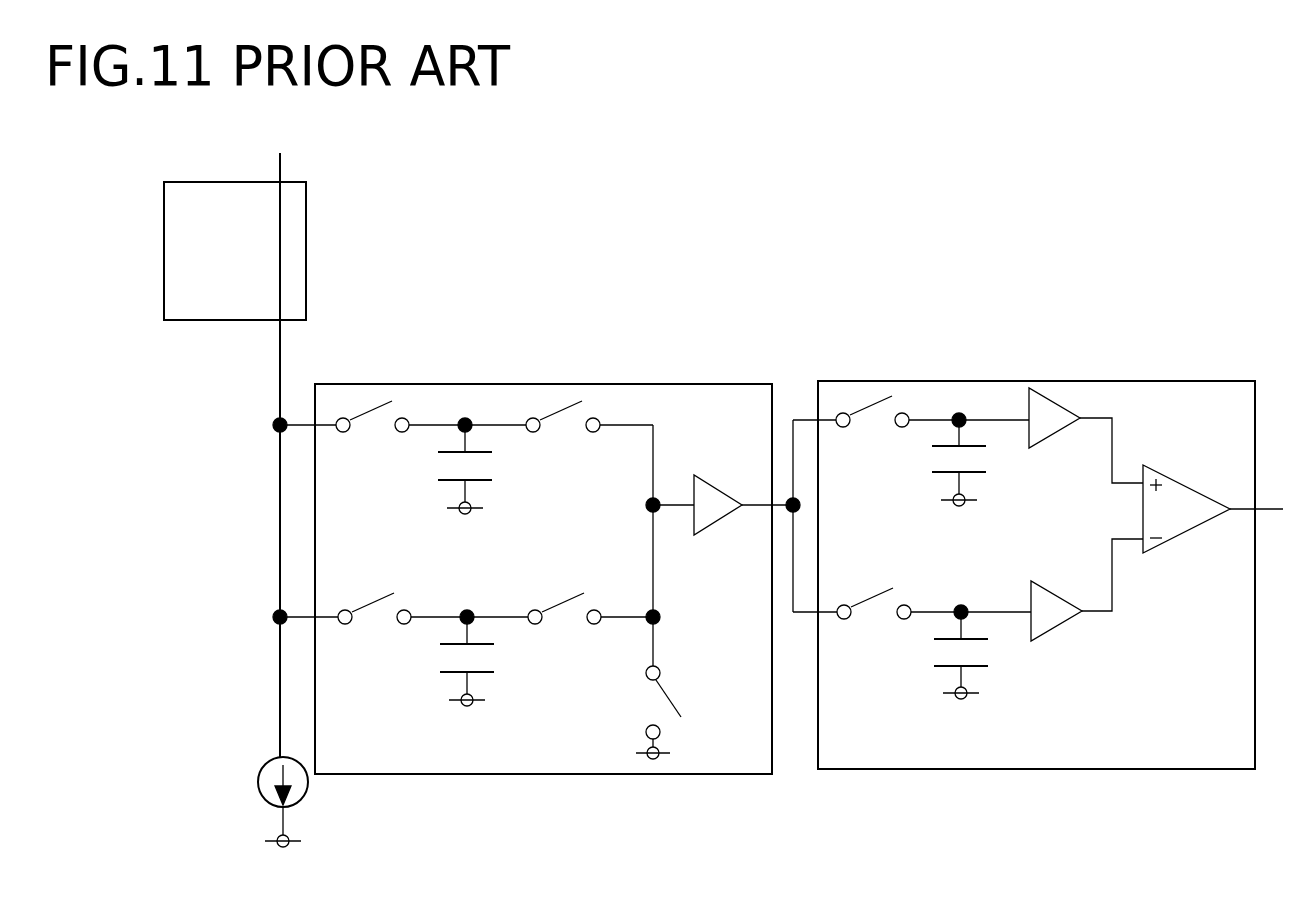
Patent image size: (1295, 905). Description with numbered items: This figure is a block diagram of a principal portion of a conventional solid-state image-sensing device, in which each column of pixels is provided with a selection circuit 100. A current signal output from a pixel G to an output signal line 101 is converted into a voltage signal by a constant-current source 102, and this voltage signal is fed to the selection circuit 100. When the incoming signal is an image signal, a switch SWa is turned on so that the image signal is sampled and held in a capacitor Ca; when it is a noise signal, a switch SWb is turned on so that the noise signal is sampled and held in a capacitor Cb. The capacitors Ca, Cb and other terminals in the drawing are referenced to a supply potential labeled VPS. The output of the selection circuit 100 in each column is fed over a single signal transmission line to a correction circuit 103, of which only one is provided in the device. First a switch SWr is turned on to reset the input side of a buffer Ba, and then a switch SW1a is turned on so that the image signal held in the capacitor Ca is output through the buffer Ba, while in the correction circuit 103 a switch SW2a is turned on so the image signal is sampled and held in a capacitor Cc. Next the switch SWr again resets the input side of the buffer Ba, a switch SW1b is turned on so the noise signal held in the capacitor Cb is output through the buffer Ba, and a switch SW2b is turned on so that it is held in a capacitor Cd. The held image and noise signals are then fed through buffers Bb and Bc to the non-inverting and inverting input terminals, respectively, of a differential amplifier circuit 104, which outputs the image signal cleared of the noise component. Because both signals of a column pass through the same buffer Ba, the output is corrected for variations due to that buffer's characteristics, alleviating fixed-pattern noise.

The selection circuit 100 is at (547, 776).
The output signal line 101 is at (281, 662).
The constant-current source 102 is at (260, 782).
The correction circuit 103 is at (1040, 770).
The differential amplifier circuit 104 is at (1190, 540).
The pixel G is at (306, 262).
The switch SWa is at (368, 433).
The switch SWb is at (370, 625).
The switch SW1a is at (566, 430).
The switch SW1b is at (568, 622).
The switch SWr is at (670, 708).
The switch SW2a is at (868, 425).
The switch SW2b is at (869, 617).
The capacitor Ca is at (486, 460).
The capacitor Cb is at (489, 652).
The capacitor Cc is at (980, 453).
The capacitor Cd is at (983, 646).
The buffer Ba is at (718, 520).
The buffer Bb is at (1052, 432).
The buffer Bc is at (1056, 626).
The power supply / reference voltage terminal VPS is at (653, 671).